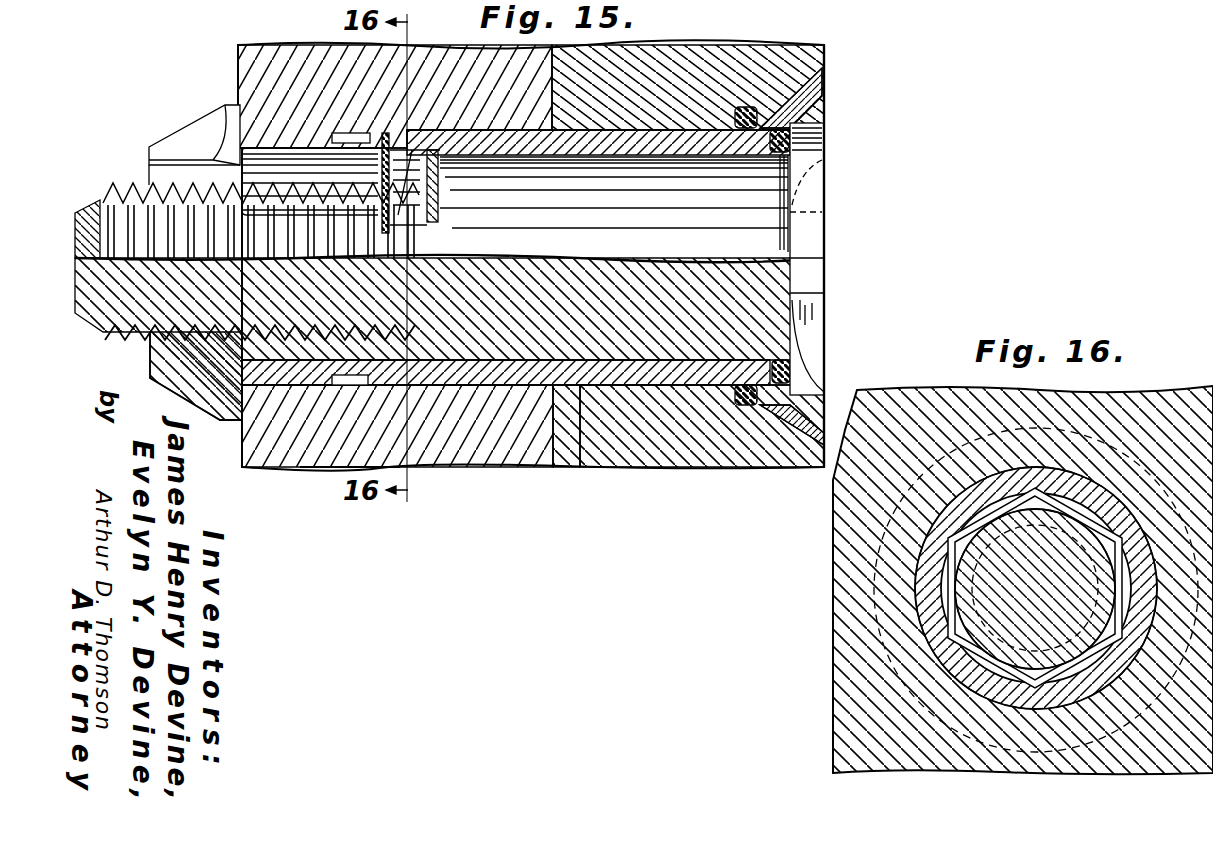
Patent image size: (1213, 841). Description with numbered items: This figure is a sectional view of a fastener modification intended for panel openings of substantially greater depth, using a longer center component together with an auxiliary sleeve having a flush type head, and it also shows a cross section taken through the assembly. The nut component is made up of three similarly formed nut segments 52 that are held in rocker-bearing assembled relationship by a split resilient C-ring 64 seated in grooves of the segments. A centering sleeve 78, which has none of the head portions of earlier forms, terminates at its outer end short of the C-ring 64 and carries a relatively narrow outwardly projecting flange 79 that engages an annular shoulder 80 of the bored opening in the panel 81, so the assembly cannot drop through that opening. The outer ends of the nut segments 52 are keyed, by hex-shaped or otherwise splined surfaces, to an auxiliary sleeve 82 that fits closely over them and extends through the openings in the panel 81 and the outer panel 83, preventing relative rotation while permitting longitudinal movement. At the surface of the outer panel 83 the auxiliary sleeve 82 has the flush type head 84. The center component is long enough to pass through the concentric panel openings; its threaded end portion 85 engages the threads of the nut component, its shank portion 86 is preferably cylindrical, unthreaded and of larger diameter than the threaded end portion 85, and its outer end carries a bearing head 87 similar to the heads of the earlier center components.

In FIG. 15, the nut segments 52 is at (295, 360).
In FIG. 16, the nut segments 52 is at (950, 633).
In FIG. 15, the C-ring 64 is at (345, 463).
In FIG. 15, the centering sleeve 78 is at (300, 145).
In FIG. 15, the flange 79 is at (372, 135).
In FIG. 15, the annular shoulder 80 is at (300, 143).
In FIG. 15, the panel 81 is at (493, 430).
In FIG. 16, the panel 81 is at (1178, 405).
In FIG. 15, the auxiliary sleeve 82 is at (570, 372).
In FIG. 16, the auxiliary sleeve 82 is at (915, 586).
In FIG. 15, the outer panel 83 is at (703, 430).
In FIG. 15, the flush type head 84 is at (790, 104).
In FIG. 15, the threaded end portion 85 is at (148, 334).
In FIG. 16, the threaded end portion 85 is at (995, 578).
In FIG. 15, the shank portion 86 is at (658, 318).
In FIG. 15, the bearing head 87 is at (810, 157).